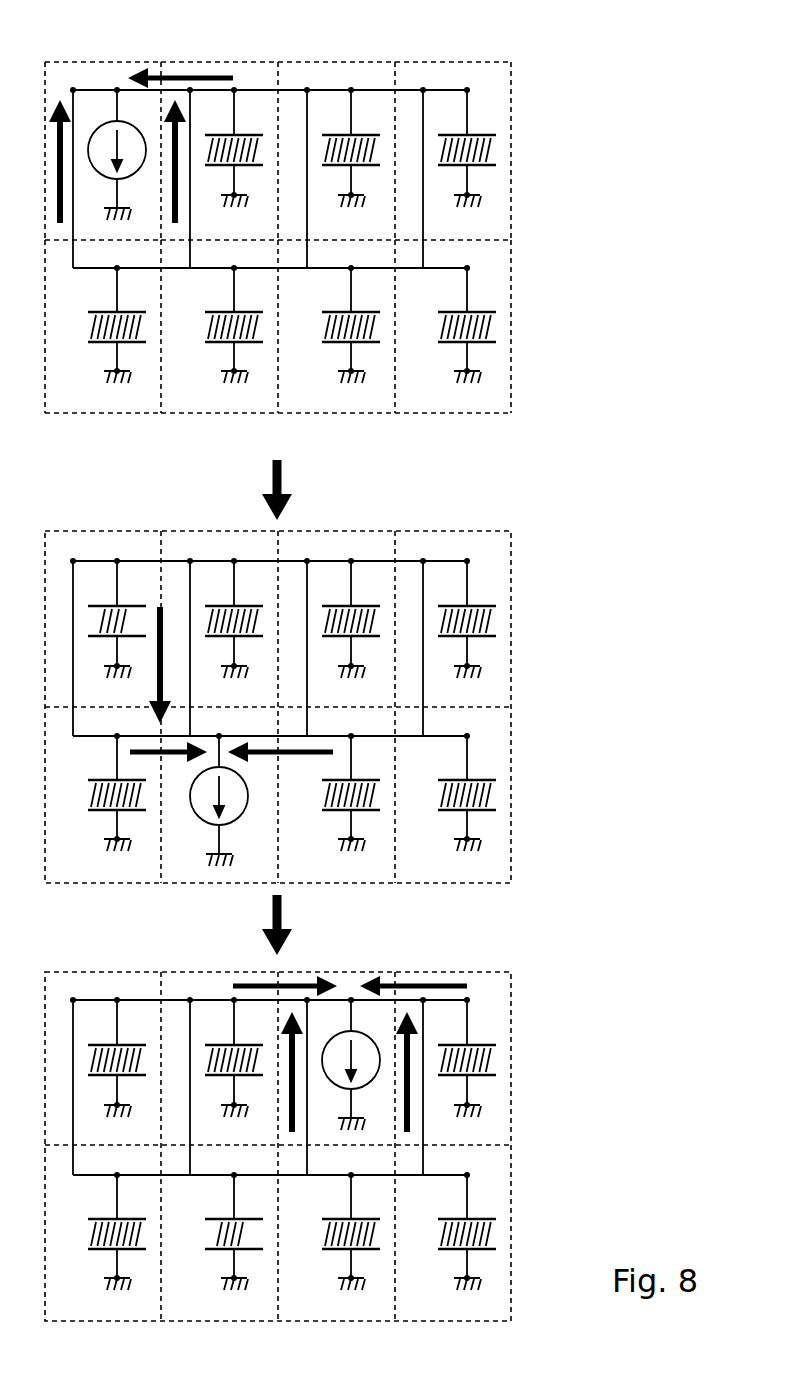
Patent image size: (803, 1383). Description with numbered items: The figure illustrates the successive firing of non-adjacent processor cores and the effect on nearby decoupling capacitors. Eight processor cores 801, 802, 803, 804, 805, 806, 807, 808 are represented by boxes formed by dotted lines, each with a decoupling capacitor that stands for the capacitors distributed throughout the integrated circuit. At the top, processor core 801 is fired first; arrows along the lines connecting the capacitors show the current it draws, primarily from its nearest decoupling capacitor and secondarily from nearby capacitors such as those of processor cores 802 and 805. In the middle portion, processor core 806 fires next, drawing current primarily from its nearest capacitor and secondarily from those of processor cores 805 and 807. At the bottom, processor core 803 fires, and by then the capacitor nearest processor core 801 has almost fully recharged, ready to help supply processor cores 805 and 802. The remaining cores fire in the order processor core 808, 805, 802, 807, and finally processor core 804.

The processor core 801 is at (93, 62).
The processor core 802 is at (208, 62).
The processor core 803 is at (325, 62).
The processor core 804 is at (442, 62).
The processor core 805 is at (118, 414).
The processor core 806 is at (235, 414).
The processor core 807 is at (353, 414).
The processor core 808 is at (467, 414).